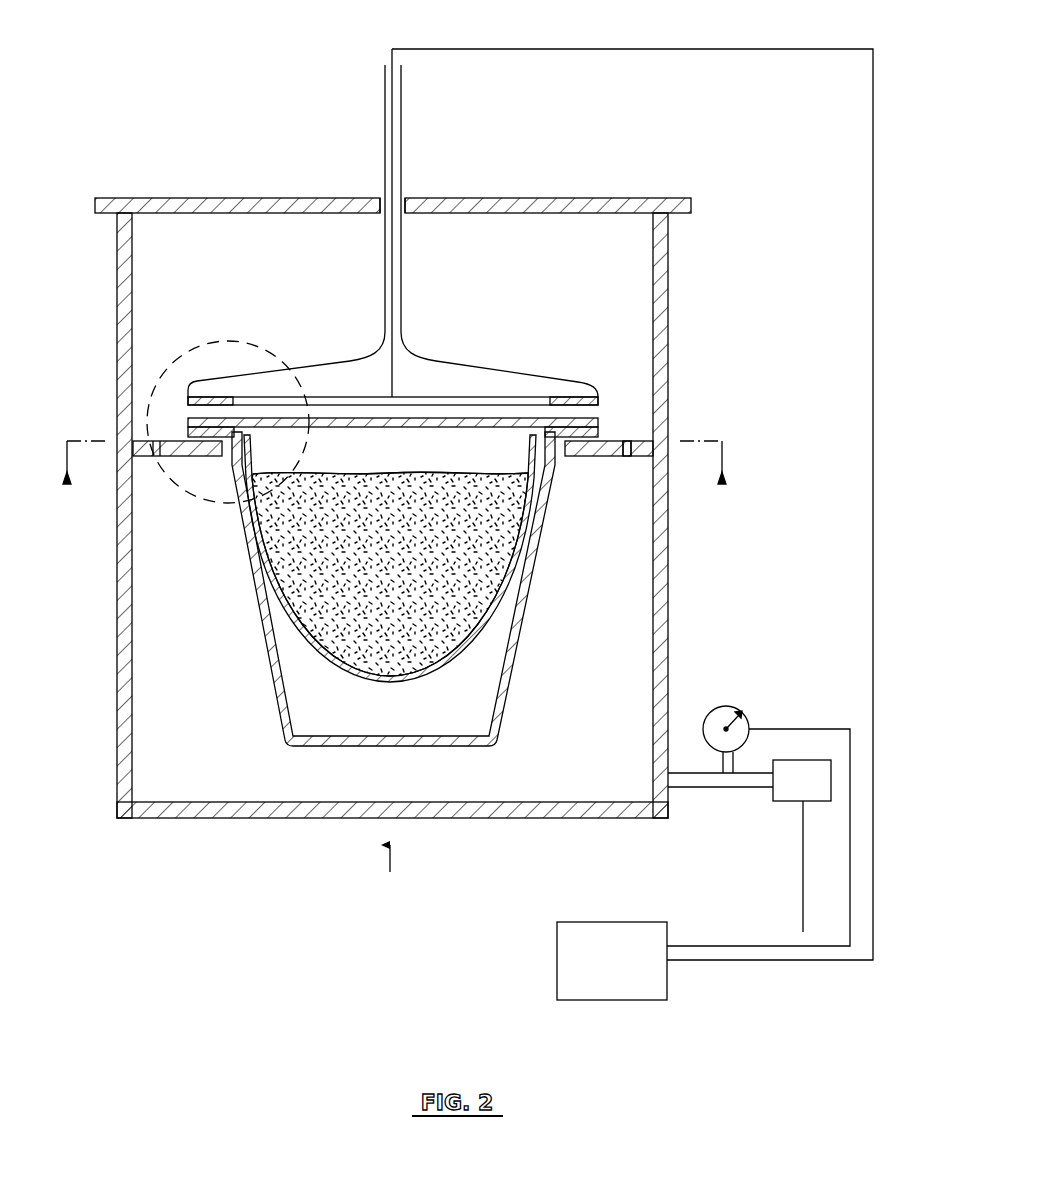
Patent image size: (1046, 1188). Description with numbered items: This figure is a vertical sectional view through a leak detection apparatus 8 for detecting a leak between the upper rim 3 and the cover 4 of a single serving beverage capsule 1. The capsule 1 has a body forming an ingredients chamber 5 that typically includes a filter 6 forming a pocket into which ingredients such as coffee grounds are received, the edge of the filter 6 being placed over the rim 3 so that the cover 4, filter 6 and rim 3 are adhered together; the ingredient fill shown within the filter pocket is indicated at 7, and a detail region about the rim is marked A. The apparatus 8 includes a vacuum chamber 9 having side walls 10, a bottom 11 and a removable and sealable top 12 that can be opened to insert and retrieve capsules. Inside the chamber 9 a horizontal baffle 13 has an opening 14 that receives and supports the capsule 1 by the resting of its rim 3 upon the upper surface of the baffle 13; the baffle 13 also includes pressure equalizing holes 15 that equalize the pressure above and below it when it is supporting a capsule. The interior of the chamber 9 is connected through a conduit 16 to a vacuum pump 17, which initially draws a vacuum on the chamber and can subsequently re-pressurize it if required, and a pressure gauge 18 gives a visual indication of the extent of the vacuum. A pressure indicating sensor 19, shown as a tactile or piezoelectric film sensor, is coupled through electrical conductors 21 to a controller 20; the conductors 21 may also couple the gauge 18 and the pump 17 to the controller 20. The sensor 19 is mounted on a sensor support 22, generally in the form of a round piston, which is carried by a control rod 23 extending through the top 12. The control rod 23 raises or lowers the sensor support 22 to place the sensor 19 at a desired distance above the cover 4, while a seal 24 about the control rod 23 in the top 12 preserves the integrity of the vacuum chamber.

The single serving beverage capsule 1 is at (527, 628).
The upper rim 3 is at (394, 479).
The cover 4 is at (598, 424).
The ingredients chamber 5 is at (382, 725).
The filter 6 is at (300, 645).
The melt material 7 is at (383, 566).
The apparatus 8 is at (389, 872).
The vacuum chamber 9 is at (170, 228).
The side walls 10 is at (661, 322).
The bottom 11 is at (246, 808).
The removable and sealable top 12 is at (237, 206).
The horizontal baffle 13 is at (614, 452).
The opening 14 is at (562, 455).
The pressure equalizing holes 15 is at (628, 441).
The conduit 16 is at (681, 790).
The vacuum pump 17 is at (790, 793).
The pressure gauge 18 is at (722, 708).
The pressure indicating sensor 19 is at (598, 396).
The controller 20 is at (612, 985).
The electrical conductors 21 is at (760, 948).
The sensor support 22 is at (428, 357).
The control rod 23 is at (384, 92).
The seal 24 is at (385, 198).
The detail A is at (215, 341).